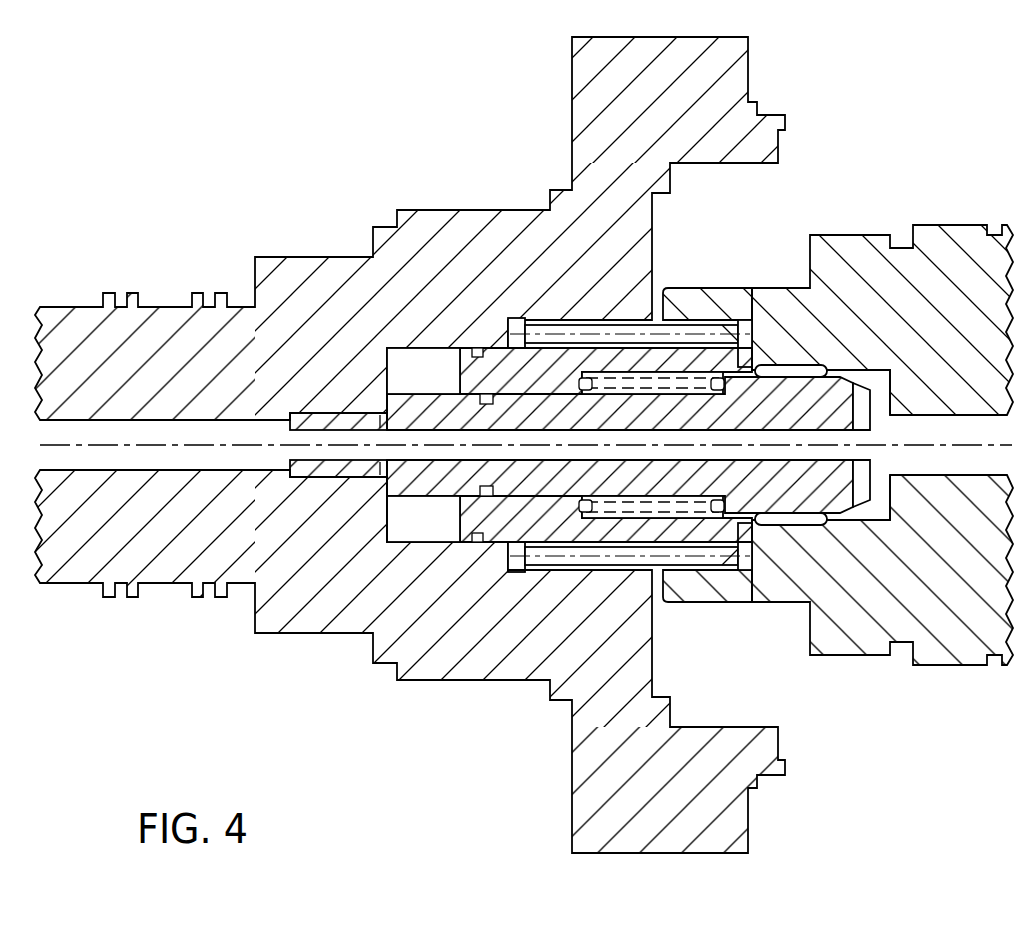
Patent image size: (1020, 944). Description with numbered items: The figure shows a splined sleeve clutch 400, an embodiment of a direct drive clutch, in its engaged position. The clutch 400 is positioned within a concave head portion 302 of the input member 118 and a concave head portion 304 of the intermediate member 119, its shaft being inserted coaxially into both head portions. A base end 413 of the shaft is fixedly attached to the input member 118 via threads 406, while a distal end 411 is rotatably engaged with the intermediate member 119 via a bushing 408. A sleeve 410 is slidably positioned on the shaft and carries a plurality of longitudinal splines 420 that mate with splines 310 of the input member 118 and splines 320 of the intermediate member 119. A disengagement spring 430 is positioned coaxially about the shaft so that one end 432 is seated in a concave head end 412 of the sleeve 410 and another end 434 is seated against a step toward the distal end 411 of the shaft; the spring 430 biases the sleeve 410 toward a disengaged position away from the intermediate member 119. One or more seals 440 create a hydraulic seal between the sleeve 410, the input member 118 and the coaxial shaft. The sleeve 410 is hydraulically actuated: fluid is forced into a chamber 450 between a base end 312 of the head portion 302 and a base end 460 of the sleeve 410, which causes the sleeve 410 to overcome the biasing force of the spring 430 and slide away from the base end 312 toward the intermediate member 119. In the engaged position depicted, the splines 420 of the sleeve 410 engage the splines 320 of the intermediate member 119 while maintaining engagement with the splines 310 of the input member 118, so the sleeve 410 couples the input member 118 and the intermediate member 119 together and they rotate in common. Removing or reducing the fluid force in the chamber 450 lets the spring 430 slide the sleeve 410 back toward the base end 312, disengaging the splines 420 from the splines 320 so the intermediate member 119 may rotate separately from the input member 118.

The input member 118 is at (72, 318).
The intermediate member 119 is at (957, 255).
The concave head portion 302 is at (790, 196).
The concave head portion 304 is at (655, 595).
The splines 310 is at (560, 565).
The base end 312 is at (383, 528).
The splines 320 is at (730, 327).
The splined sleeve clutch 400 is at (472, 317).
The threads 406 is at (325, 473).
The bushing 408 is at (807, 370).
The sleeve 410 is at (498, 352).
The distal end 411 is at (867, 408).
The concave head end 412 is at (752, 535).
The base end 413 is at (322, 425).
The longitudinal splines 420 is at (617, 328).
The disengagement spring 430 is at (668, 383).
The end 432 is at (583, 383).
The end 434 is at (723, 385).
The seals 440 is at (477, 540).
The chamber 450 is at (407, 535).
The base end 460 is at (453, 365).